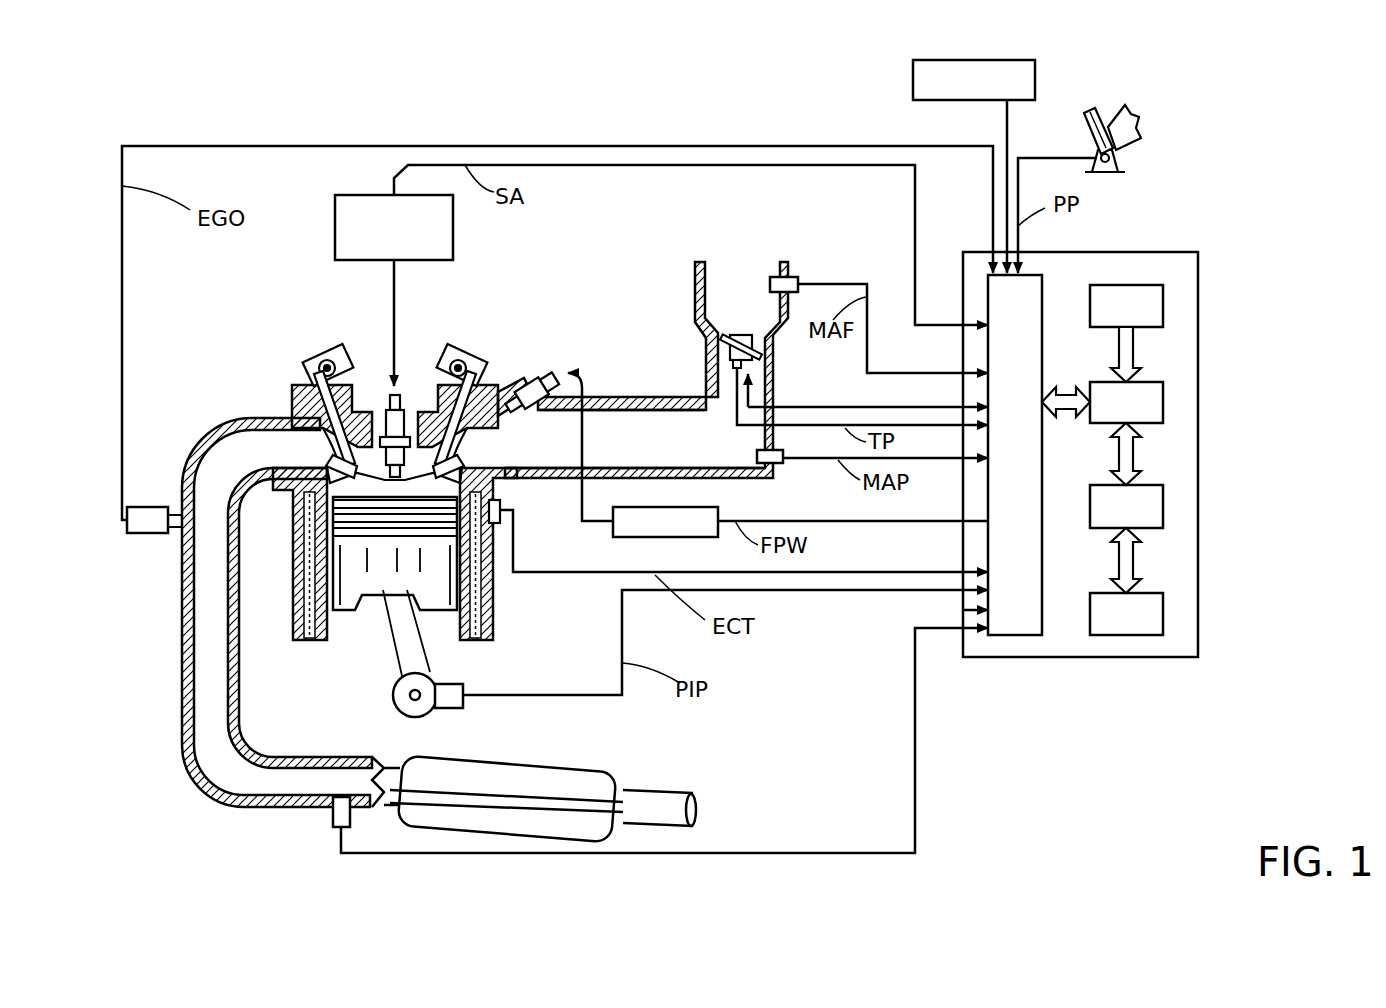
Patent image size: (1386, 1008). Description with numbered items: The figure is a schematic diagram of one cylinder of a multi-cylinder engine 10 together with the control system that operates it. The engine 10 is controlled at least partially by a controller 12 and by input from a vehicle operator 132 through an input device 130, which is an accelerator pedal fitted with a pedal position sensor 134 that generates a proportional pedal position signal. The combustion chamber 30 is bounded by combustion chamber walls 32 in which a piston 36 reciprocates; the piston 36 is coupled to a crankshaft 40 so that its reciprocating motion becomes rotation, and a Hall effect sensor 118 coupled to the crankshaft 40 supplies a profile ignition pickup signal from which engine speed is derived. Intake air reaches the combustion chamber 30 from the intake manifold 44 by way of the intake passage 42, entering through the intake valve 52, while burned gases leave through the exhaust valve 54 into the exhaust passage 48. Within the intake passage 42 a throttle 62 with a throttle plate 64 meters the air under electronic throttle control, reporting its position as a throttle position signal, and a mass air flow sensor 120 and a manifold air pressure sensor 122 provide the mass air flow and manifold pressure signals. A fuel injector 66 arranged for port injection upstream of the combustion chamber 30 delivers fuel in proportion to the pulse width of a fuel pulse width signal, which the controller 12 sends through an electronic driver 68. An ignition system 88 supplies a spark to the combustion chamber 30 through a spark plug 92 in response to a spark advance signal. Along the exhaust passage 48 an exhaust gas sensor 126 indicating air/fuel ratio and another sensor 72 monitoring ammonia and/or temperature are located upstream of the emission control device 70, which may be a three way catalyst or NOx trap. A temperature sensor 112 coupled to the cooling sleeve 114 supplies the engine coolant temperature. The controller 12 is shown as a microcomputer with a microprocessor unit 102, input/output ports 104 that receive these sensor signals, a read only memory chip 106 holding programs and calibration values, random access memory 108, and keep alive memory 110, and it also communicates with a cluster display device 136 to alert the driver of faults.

The engine 10 is at (222, 333).
The controller 12 is at (1127, 441).
The combustion chamber 30 is at (392, 485).
The combustion chamber walls 32 is at (332, 628).
The piston 36 is at (395, 640).
The crankshaft 40 is at (405, 715).
The intake passage 42 is at (751, 311).
The intake manifold 44 is at (687, 456).
The exhaust passage 48 is at (272, 460).
The intake valve 52 is at (448, 462).
The exhaust valve 54 is at (350, 460).
The throttle 62 is at (758, 345).
The throttle plate 64 is at (722, 342).
The fuel injector 66 is at (534, 385).
The electronic driver 68 is at (642, 537).
The emission control device 70 is at (572, 769).
The sensor 72 is at (333, 812).
The ignition system 88 is at (346, 195).
The spark plug 92 is at (400, 392).
The microprocessor unit 102 is at (1165, 395).
The input/output ports 104 is at (1045, 280).
The read only memory chip 106 is at (1165, 298).
The random access memory 108 is at (1165, 500).
The keep alive memory 110 is at (1165, 605).
The temperature sensor 112 is at (505, 510).
The cooling sleeve 114 is at (497, 598).
The Hall effect sensor 118 is at (450, 708).
The mass air flow sensor 120 is at (800, 278).
The manifold air pressure sensor 122 is at (778, 466).
The exhaust gas sensor 126 is at (127, 510).
The input device 130 is at (1094, 136).
The vehicle operator 132 is at (1140, 118).
The pedal position sensor 134 is at (1125, 158).
The cluster display device 136 is at (913, 84).